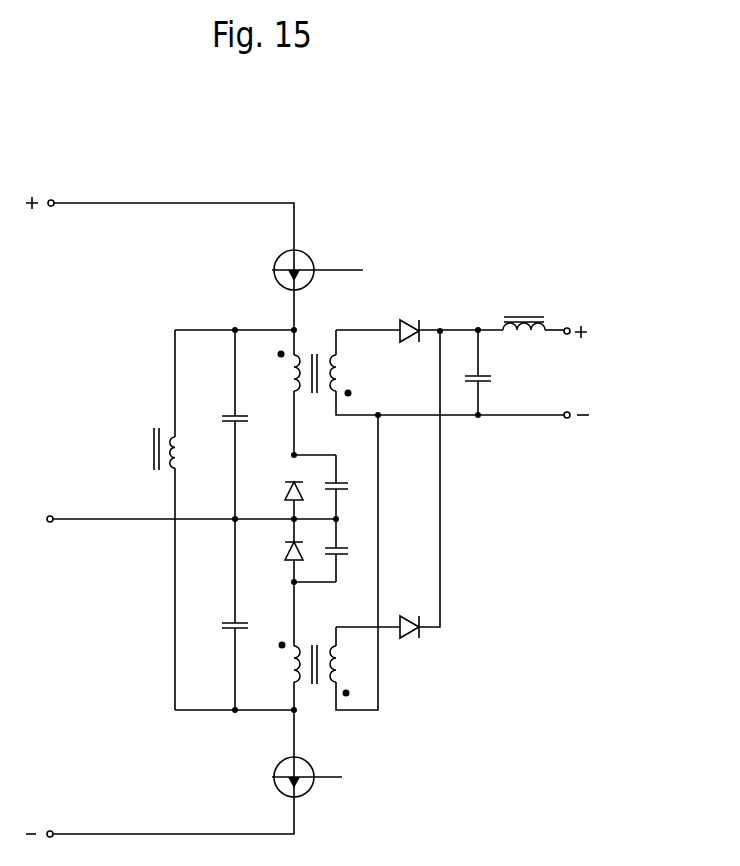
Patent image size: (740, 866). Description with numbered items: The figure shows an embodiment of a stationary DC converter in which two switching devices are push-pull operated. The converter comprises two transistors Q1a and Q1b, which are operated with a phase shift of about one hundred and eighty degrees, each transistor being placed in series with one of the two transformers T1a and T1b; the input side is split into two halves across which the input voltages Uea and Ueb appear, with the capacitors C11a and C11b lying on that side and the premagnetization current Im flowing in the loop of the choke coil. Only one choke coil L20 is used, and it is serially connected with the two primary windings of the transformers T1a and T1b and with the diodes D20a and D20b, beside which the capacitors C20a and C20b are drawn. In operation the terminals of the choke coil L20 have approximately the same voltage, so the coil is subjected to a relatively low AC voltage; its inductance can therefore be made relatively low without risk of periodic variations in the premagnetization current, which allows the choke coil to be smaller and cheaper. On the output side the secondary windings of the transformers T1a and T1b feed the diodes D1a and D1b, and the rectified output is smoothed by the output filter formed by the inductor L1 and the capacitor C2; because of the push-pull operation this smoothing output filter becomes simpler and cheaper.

The transistor Q1a is at (317, 257).
The transistor Q1b is at (309, 767).
The transformer T1a is at (315, 358).
The transformer T1b is at (314, 656).
The first rectifier diode D1a is at (414, 316).
The second rectifier diode D1b is at (412, 614).
The output filter inductor L1 is at (524, 309).
The output filter capacitor C2 is at (485, 391).
The choke coil L20 is at (186, 449).
The first input capacitor C11a is at (250, 405).
The second input capacitor C11b is at (249, 612).
The diode D20a is at (274, 477).
The first clamp capacitor C20a is at (357, 471).
The diode D20b is at (275, 543).
The second clamp capacitor C20b is at (350, 576).
The magnetizing current Im is at (214, 710).
The first input voltage Uea is at (95, 203).
The second input voltage Ueb is at (95, 834).